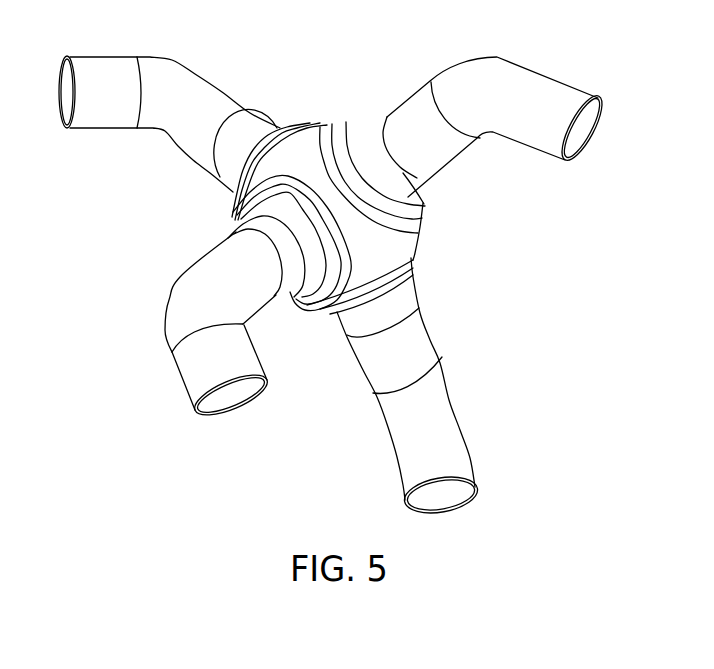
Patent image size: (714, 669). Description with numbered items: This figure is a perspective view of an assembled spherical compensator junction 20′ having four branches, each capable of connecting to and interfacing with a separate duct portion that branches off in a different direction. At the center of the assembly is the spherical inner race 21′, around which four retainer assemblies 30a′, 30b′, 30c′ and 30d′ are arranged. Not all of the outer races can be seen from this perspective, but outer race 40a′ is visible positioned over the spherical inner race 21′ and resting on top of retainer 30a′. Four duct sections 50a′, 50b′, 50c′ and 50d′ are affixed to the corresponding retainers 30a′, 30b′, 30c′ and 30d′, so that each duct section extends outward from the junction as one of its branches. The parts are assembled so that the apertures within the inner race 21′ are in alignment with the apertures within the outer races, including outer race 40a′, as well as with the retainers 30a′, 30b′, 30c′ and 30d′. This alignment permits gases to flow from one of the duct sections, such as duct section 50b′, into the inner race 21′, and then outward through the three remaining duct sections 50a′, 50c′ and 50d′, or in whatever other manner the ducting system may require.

The compensator junction 20′ is at (325, 103).
The spherical inner race 21′ is at (282, 157).
The retainer assembly 30a′ is at (403, 213).
The retainer assembly 30b′ is at (250, 137).
The retainer assembly 30c′ is at (298, 258).
The retainer assembly 30d′ is at (395, 313).
The outer race 40a′ is at (404, 203).
The duct section 50a′ is at (525, 80).
The duct section 50b′ is at (162, 72).
The duct section 50c′ is at (197, 293).
The duct section 50d′ is at (438, 425).